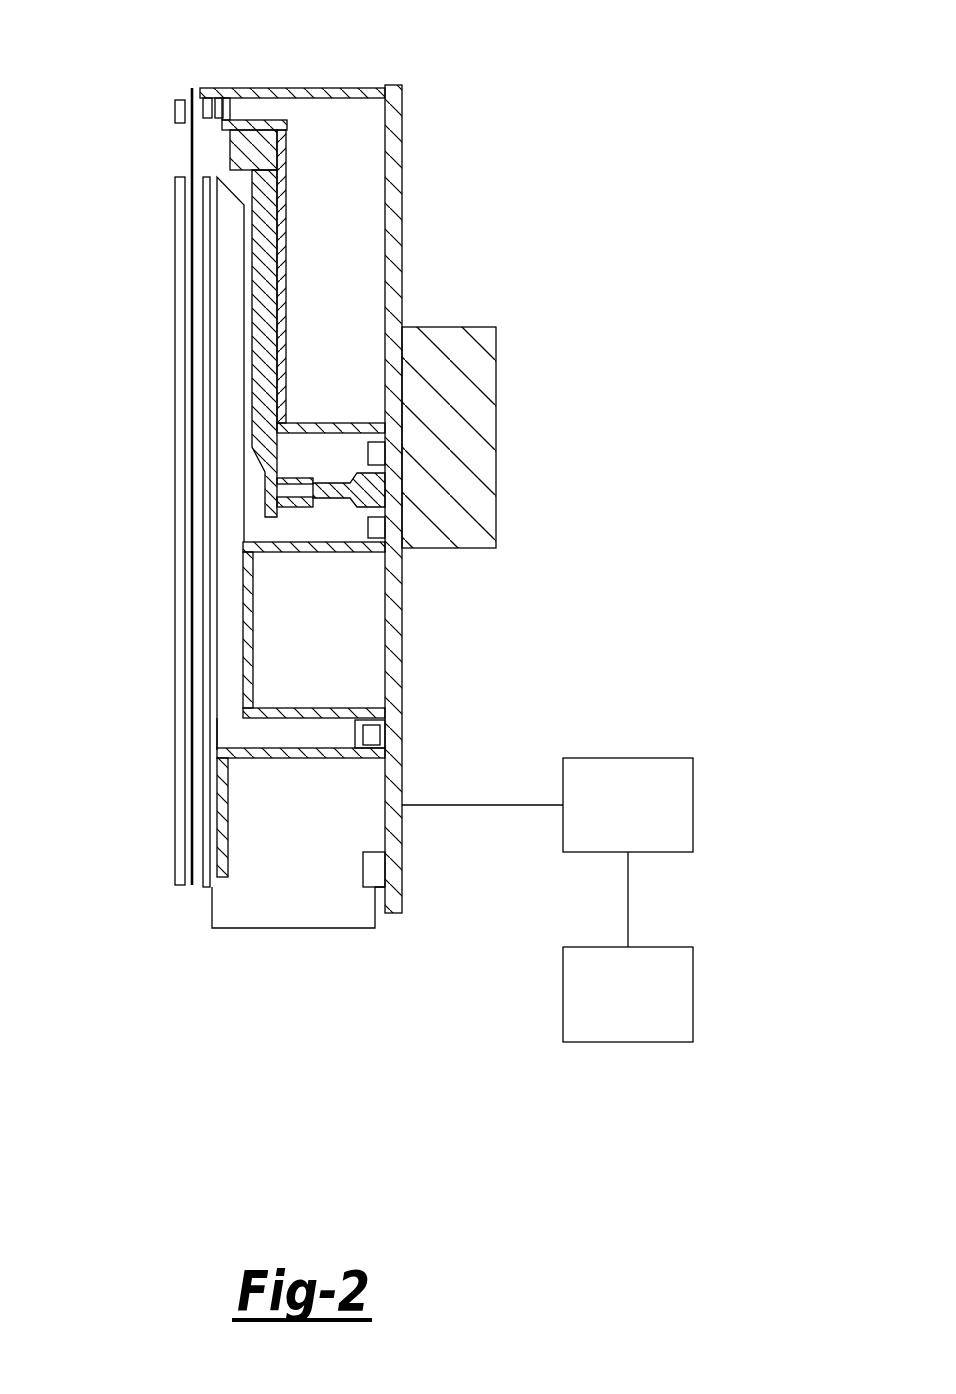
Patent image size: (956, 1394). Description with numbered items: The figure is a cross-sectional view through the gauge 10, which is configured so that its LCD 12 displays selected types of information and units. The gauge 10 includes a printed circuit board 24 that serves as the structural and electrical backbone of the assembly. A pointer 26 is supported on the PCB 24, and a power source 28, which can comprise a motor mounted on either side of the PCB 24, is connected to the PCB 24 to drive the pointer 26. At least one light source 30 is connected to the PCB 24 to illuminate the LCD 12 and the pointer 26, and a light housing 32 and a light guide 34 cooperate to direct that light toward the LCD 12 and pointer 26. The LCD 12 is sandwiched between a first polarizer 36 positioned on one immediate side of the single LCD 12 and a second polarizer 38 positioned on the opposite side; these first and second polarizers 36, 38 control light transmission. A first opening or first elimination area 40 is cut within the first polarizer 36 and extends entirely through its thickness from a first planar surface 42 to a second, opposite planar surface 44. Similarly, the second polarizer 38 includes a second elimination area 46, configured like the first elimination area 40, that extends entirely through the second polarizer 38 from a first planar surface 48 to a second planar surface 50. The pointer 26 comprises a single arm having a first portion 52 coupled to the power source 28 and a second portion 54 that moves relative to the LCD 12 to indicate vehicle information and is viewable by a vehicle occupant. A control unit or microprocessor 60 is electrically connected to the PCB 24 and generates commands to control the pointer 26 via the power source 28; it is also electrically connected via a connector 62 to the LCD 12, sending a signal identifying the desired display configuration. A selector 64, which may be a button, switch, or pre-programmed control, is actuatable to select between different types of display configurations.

The gauge 10 is at (622, 133).
The LCD 12 is at (196, 250).
The printed circuit board 24 is at (402, 182).
The pointer 26 is at (267, 370).
The power source 28 is at (463, 428).
The light source 30 is at (372, 733).
The light housing 32 is at (256, 88).
The light guide 34 is at (322, 738).
The first polarizer 36 is at (180, 630).
The second polarizer 38 is at (212, 719).
The first elimination area 40 is at (178, 150).
The first planar surface 42 is at (173, 110).
The second planar surface 44 is at (200, 97).
The second elimination area 46 is at (213, 157).
The first planar surface 48 is at (215, 95).
The second planar surface 50 is at (222, 112).
The first portion 52 is at (278, 455).
The second portion 54 is at (258, 202).
The microprocessor 60 is at (695, 797).
The connector 62 is at (290, 930).
The selector 64 is at (695, 990).